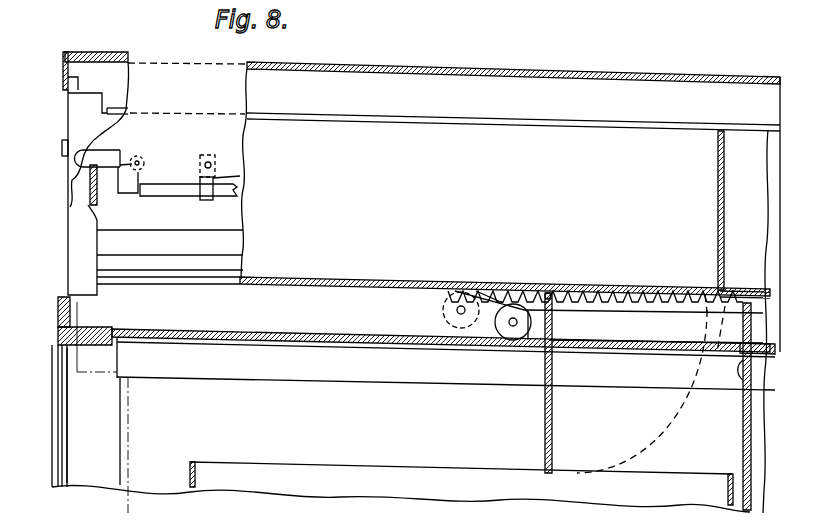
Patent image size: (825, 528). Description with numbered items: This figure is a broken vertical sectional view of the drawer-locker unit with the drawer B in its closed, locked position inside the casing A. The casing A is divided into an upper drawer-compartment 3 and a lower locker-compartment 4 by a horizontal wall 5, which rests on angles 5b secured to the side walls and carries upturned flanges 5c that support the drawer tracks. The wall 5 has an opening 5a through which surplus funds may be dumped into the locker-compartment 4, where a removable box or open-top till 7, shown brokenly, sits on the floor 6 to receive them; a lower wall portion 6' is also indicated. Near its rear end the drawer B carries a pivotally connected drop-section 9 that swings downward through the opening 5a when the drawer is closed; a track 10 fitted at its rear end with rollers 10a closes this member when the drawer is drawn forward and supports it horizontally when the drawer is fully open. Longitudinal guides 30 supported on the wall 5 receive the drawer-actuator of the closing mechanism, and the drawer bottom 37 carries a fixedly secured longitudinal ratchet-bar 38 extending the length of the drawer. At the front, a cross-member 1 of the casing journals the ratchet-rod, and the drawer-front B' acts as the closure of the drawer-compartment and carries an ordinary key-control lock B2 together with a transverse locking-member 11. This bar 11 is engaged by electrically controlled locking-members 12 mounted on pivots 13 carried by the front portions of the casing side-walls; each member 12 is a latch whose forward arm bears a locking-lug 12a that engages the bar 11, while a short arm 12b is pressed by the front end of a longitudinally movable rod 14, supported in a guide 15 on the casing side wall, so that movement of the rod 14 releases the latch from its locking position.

The casing A is at (437, 71).
The drawer-compartment 3 is at (563, 86).
The upturned flange 5c is at (410, 113).
The drawer B is at (280, 173).
The key-control lock B2 is at (63, 152).
The locking-lug 12a is at (68, 165).
The transverse locking-member 11 is at (88, 189).
The front plate B' is at (68, 178).
The cross-member 1 is at (58, 303).
The locking-member 12 is at (124, 151).
The pivot 13 is at (145, 160).
The short arm 12b is at (133, 195).
The longitudinally movable rod 14 is at (195, 197).
The guide 15 is at (213, 180).
The drawer bottom 37 is at (383, 278).
The track 10 is at (533, 323).
The roller 10a is at (508, 293).
The longitudinal guide 30 is at (600, 318).
The ratchet-bar 38 is at (684, 296).
The horizontal wall 5 is at (395, 344).
The opening 5a is at (623, 346).
The angle 5b is at (202, 370).
The locker-compartment 4 is at (164, 416).
The floor 6 is at (401, 428).
The housing wall 6' is at (37, 416).
The removable box 7 is at (208, 463).
The drop-section 9 is at (545, 405).